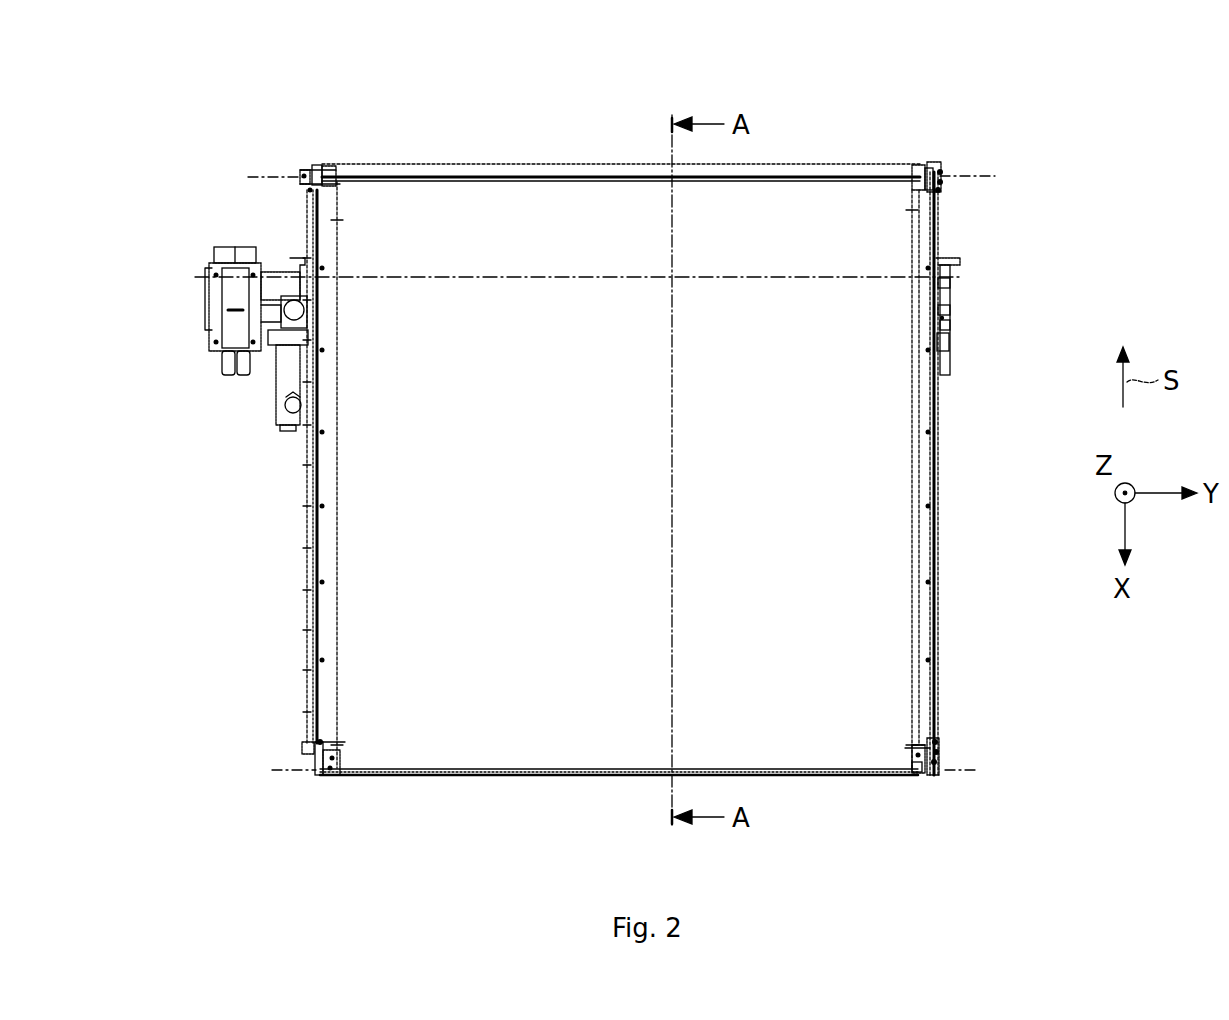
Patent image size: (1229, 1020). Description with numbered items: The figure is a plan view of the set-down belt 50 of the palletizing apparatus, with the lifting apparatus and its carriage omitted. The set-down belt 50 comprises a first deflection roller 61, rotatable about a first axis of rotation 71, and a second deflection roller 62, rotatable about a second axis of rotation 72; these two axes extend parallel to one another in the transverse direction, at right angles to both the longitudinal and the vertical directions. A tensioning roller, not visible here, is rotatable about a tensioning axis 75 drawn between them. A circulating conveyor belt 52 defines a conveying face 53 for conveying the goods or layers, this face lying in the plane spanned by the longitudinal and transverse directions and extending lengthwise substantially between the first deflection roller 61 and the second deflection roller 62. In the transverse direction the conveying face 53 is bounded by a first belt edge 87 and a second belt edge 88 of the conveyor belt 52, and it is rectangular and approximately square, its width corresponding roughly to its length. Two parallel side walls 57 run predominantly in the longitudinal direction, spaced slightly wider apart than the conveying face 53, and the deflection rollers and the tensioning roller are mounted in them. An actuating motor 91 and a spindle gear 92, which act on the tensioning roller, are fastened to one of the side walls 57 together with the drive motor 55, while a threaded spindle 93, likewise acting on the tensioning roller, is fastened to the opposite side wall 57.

The set-down belt 50 is at (1104, 198).
The conveyor belt 52 is at (625, 475).
The conveying face 53 is at (556, 742).
The drive motor 55 is at (213, 300).
The side walls 57 is at (305, 616).
The first deflection roller 61 is at (918, 777).
The second deflection roller 62 is at (914, 166).
The first axis of rotation 71 is at (948, 767).
The second axis of rotation 72 is at (966, 172).
The tensioning axis 75 is at (772, 277).
The first belt edge 87 is at (922, 537).
The second belt edge 88 is at (337, 536).
The actuating motor 91 is at (288, 405).
The spindle gear 92 is at (300, 309).
The threaded spindle 93 is at (945, 323).